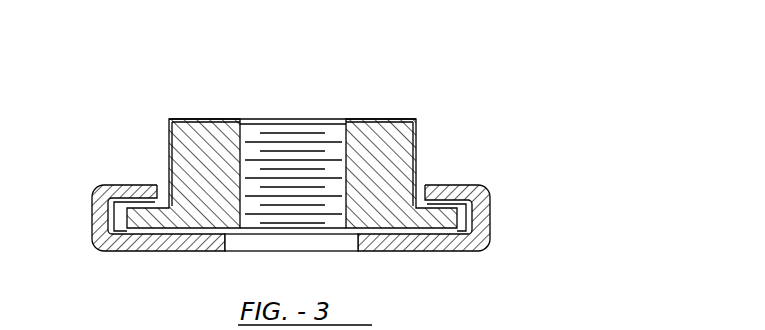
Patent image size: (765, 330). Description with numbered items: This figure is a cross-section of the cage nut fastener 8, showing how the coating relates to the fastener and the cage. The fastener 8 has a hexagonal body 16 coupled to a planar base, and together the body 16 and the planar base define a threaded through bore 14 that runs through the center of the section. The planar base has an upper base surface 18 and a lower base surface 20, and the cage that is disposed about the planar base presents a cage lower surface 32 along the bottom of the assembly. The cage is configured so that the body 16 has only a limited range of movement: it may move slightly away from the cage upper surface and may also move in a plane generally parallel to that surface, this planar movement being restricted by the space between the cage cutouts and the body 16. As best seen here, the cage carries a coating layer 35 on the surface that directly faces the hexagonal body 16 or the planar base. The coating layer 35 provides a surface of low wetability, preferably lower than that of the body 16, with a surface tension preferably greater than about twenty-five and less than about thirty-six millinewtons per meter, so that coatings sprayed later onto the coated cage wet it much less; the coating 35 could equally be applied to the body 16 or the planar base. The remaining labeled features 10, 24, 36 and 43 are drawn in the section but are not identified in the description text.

The cage nut fastener 8 is at (452, 78).
The thermoelectric module block 10 is at (394, 142).
The threaded through bore 14 is at (294, 134).
The body 16 is at (127, 214).
The upper base surface 18 is at (440, 196).
The lower base surface 20 is at (202, 245).
The base opening 24 is at (295, 242).
The cage lower surface 32 is at (132, 186).
The coating layer 35 is at (198, 119).
The right base plate portion 36 is at (417, 228).
The left block wall 43 is at (168, 200).